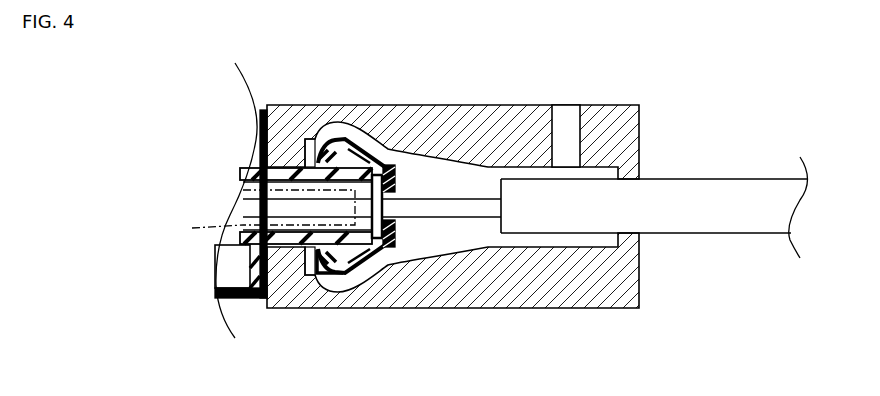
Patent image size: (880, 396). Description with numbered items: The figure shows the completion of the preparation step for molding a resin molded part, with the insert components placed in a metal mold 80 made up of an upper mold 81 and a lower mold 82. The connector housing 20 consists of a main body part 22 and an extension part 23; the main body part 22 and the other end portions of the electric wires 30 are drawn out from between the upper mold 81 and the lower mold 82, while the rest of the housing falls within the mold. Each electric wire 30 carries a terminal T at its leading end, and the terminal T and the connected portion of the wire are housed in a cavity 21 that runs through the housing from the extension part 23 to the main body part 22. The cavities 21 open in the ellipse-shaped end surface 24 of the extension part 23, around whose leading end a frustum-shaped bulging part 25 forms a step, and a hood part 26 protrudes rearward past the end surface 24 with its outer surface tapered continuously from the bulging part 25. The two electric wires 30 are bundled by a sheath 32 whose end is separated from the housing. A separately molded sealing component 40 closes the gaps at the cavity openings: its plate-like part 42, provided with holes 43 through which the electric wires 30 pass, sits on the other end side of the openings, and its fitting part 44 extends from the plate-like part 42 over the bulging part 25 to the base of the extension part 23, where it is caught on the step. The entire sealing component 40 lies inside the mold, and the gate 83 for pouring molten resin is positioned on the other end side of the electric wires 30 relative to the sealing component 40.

The terminal T is at (208, 228).
The connector housing 20 is at (228, 301).
The cavity 21 is at (316, 232).
The main body part 22 is at (263, 305).
The extension part 23 is at (311, 166).
The end surface 24 is at (378, 170).
The bulging part 25 is at (348, 140).
The hood part 26 is at (372, 244).
The electric wire 30 is at (450, 207).
The sheath 32 is at (727, 222).
The sealing component 40 is at (415, 271).
The plate-like part 42 is at (396, 184).
The hole 43 is at (395, 220).
The fitting part 44 is at (340, 275).
The metal mold 80 is at (452, 201).
The upper mold 81 is at (480, 105).
The lower mold 82 is at (603, 300).
The gate 83 is at (557, 117).